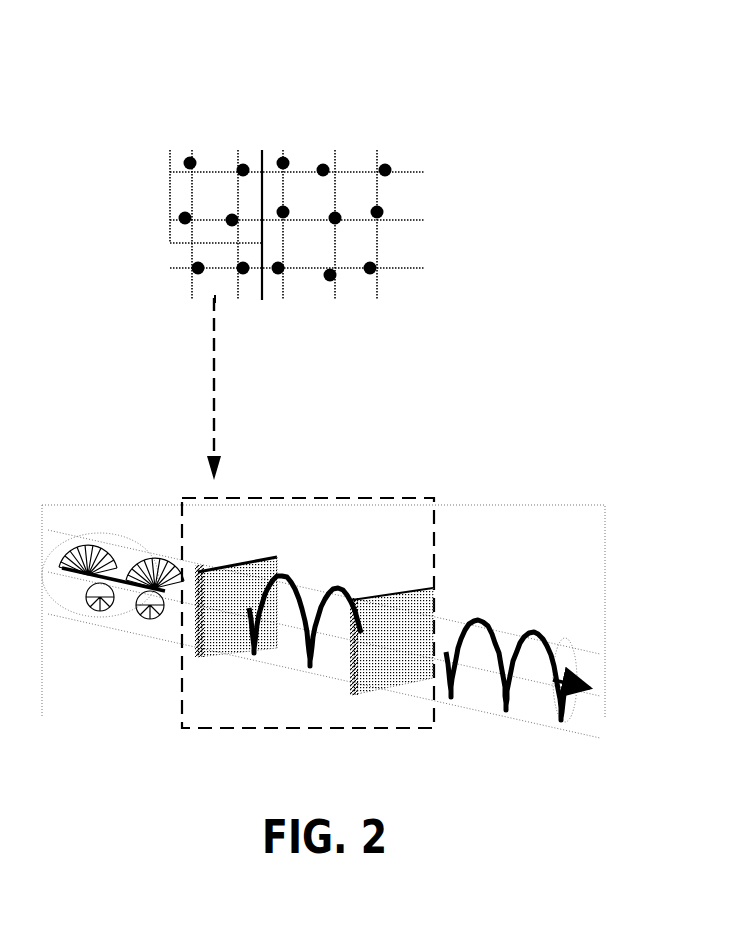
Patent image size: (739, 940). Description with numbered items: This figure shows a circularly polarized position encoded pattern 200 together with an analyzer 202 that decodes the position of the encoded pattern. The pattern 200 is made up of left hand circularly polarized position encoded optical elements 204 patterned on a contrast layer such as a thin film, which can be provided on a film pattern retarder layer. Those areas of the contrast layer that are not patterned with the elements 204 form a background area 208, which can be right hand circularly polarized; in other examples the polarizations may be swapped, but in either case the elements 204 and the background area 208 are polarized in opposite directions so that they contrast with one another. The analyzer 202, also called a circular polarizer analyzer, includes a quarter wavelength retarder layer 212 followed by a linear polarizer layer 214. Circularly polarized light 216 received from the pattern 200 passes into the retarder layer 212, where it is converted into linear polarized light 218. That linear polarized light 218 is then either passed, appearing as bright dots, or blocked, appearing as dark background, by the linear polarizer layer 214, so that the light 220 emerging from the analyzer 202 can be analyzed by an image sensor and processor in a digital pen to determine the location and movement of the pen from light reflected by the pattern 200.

The circularly polarized position encoded pattern 200 is at (518, 60).
The analyzer 202 is at (205, 729).
The position encoded optical elements 204 is at (393, 161).
The background area 208 is at (308, 249).
The quarter wavelength retarder layer 212 is at (253, 556).
The linear polarizer layer 214 is at (398, 597).
The circularly polarized light 216 is at (112, 622).
The linear polarized light 218 is at (293, 670).
The output light beam 220 is at (519, 620).